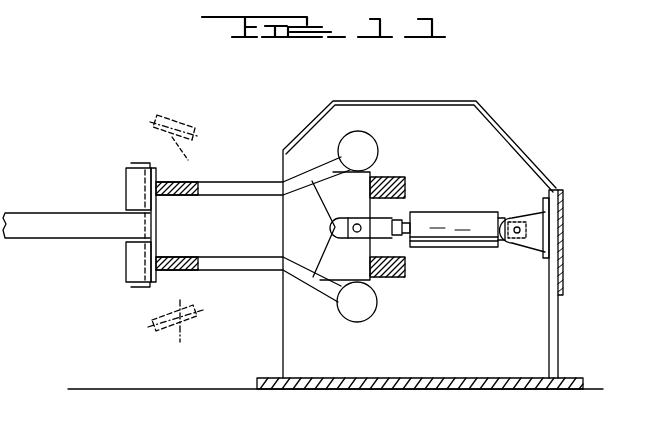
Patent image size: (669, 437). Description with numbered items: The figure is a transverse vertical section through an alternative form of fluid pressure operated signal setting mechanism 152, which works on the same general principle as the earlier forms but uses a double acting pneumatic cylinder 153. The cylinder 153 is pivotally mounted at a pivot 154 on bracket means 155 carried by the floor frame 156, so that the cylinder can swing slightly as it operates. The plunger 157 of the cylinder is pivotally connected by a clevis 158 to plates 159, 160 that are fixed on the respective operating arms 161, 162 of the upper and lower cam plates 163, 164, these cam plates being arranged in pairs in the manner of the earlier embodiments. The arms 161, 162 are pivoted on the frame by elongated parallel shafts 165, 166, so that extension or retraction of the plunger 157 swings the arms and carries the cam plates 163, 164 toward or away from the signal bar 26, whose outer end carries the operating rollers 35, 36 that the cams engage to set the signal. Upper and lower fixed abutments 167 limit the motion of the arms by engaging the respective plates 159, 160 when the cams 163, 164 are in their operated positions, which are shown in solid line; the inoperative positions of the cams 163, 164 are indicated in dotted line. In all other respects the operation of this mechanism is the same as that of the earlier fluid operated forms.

The signal bar 26 is at (80, 220).
The operating roller 35 is at (143, 272).
The operating roller 36 is at (132, 183).
The fluid pressure operated signal setting mechanism 152 is at (478, 99).
The double acting pneumatic cylinder 153 is at (473, 218).
The pivotal mounting 154 is at (515, 233).
The bracket means 155 is at (537, 233).
The floor frame 156 is at (555, 338).
The plunger 157 is at (385, 222).
The clevis 158 is at (407, 200).
The plate 159 is at (330, 208).
The plate 160 is at (325, 268).
The operating arm 161 is at (246, 186).
The operating arm 162 is at (259, 271).
The upper cam plate 163 is at (195, 183).
The lower cam plate 164 is at (204, 256).
The elongated parallel shaft 165 is at (368, 145).
The elongated parallel shaft 166 is at (365, 312).
The fixed abutment 167 is at (384, 185).